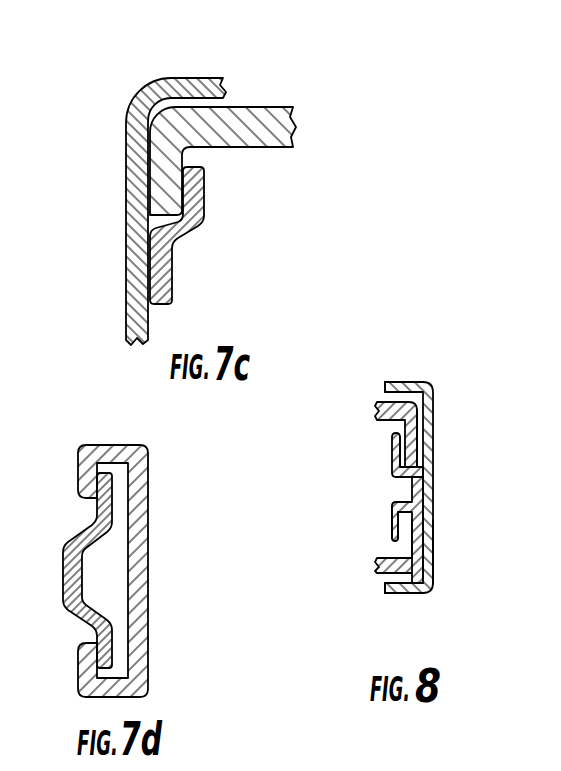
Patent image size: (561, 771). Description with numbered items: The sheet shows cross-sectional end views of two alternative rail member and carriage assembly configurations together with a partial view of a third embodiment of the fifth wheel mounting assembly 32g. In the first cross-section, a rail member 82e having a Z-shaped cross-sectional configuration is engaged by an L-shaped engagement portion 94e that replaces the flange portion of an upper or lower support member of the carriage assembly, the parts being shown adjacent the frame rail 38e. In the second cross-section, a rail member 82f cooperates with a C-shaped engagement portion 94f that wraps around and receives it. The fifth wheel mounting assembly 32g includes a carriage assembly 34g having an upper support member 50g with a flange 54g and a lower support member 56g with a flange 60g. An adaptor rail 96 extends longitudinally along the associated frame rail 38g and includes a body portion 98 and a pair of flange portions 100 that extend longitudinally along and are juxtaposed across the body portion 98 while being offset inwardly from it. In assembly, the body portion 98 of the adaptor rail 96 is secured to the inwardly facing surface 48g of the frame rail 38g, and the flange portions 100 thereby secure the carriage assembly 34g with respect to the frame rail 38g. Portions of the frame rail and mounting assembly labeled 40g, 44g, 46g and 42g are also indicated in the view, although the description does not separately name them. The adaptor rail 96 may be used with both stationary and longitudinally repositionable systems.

In FIG. 7c, the frame rail 38e is at (125, 167).
In FIG. 7c, the L-shaped engagement portion 94e is at (253, 104).
In FIG. 7c, the rail member 82e is at (205, 218).
In FIG. 7d, the C-shaped engagement portion 94f is at (148, 577).
In FIG. 7d, the rail member 82f is at (62, 575).
In FIG. 8, the fifth wheel mounting assembly 32g is at (402, 446).
In FIG. 8, the frame rail 38g is at (425, 478).
In FIG. 8, the top wall 40g is at (395, 388).
In FIG. 8, the upper support member 50g is at (385, 382).
In FIG. 8, the carriage assembly 34g is at (404, 414).
In FIG. 8, the flange 54g is at (410, 432).
In FIG. 8, the flange portions 100 is at (395, 450).
In FIG. 8, the body portion 98 is at (420, 478).
In FIG. 8, the adaptor rail 96 is at (378, 505).
In FIG. 8, the vertical web 44g is at (413, 530).
In FIG. 8, the flange 60g is at (420, 538).
In FIG. 8, the inwardly facing surface 48g is at (345, 605).
In FIG. 8, the side wall 46g is at (433, 552).
In FIG. 8, the lower support member 56g is at (375, 587).
In FIG. 8, the bottom wall 42g is at (408, 596).